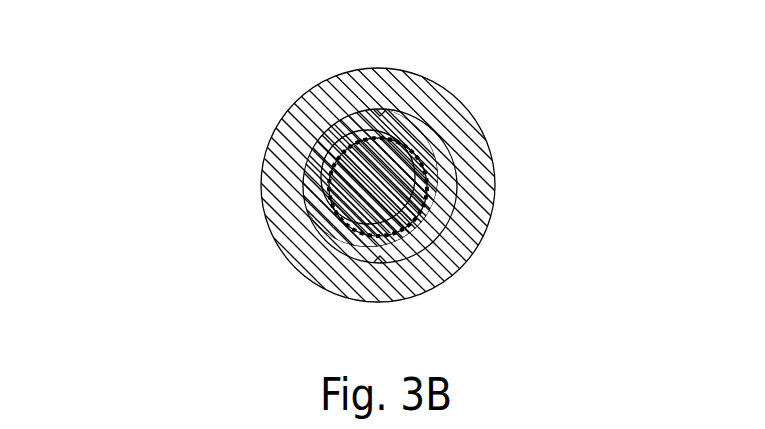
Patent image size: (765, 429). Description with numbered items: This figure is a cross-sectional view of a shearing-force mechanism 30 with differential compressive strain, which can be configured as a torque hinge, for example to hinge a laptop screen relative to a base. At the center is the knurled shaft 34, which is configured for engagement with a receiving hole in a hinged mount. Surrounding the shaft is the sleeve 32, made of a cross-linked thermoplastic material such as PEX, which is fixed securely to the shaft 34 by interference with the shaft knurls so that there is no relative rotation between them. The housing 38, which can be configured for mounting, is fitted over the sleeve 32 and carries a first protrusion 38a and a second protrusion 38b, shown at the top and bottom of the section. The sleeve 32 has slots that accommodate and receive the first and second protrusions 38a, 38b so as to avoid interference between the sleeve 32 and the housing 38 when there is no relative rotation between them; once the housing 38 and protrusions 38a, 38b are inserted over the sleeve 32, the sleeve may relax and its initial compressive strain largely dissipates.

The shearing-force mechanism 30 is at (366, 214).
The sleeve 32 is at (440, 174).
The shaft 34 is at (393, 168).
The housing 38 is at (468, 257).
The first protrusion 38a is at (380, 109).
The second protrusion 38b is at (381, 264).